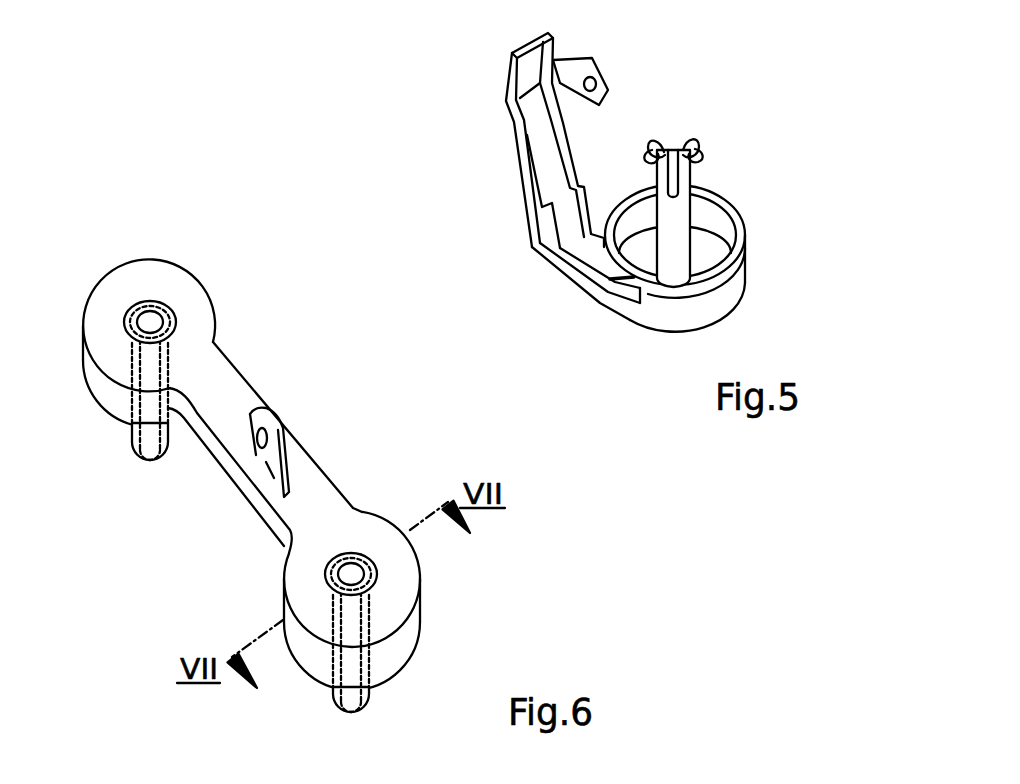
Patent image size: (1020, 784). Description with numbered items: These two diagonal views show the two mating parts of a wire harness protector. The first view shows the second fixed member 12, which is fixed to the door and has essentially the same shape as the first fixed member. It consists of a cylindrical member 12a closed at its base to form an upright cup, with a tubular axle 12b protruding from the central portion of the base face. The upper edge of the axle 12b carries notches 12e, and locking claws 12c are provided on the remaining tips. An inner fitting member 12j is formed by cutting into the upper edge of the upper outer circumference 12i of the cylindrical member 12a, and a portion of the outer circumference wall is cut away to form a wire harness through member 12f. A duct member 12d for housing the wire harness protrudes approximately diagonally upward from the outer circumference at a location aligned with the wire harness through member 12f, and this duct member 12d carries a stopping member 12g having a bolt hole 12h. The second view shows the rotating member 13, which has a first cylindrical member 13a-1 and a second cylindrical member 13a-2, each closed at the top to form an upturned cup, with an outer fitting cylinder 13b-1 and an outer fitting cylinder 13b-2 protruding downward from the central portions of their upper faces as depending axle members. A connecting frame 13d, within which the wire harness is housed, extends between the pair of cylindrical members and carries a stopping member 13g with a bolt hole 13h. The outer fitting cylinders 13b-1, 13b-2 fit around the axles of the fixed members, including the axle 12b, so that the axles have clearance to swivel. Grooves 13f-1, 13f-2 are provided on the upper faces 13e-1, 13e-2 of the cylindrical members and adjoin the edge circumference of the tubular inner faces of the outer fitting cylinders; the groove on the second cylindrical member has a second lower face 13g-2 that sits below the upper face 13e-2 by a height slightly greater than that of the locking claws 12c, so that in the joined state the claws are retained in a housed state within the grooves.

In FIG. 5, the second fixed member 12 is at (637, 323).
In FIG. 5, the cylindrical member 12a is at (688, 322).
In FIG. 5, the tubular axle 12b is at (679, 206).
In FIG. 5, the locking claws 12c is at (690, 161).
In FIG. 5, the duct member 12d is at (538, 246).
In FIG. 5, the notches 12e is at (674, 140).
In FIG. 5, the wire harness through member 12f is at (610, 288).
In FIG. 5, the stopping member 12g is at (574, 74).
In FIG. 5, the bolt hole 12h is at (596, 85).
In FIG. 5, the upper outer circumference 12i is at (746, 230).
In FIG. 5, the inner fitting member 12j is at (703, 193).
In FIG. 6, the rotating member 13 is at (338, 481).
In FIG. 6, the first cylindrical member 13a-1 is at (406, 621).
In FIG. 6, the second cylindrical member 13a-2 is at (216, 343).
In FIG. 6, the outer fitting cylinder 13b-1 is at (372, 690).
In FIG. 6, the outer fitting cylinder 13b-2 is at (134, 434).
In FIG. 6, the connecting frame 13d is at (293, 449).
In FIG. 6, the upper face 13e-1 is at (318, 618).
In FIG. 6, the upper face 13e-2 is at (200, 300).
In FIG. 6, the groove 13f-1 is at (377, 571).
In FIG. 6, the groove 13f-2 is at (154, 304).
In FIG. 6, the stopping member 13g is at (272, 470).
In FIG. 6, the second lower face 13g-2 is at (128, 322).
In FIG. 6, the bolt hole 13h is at (264, 440).